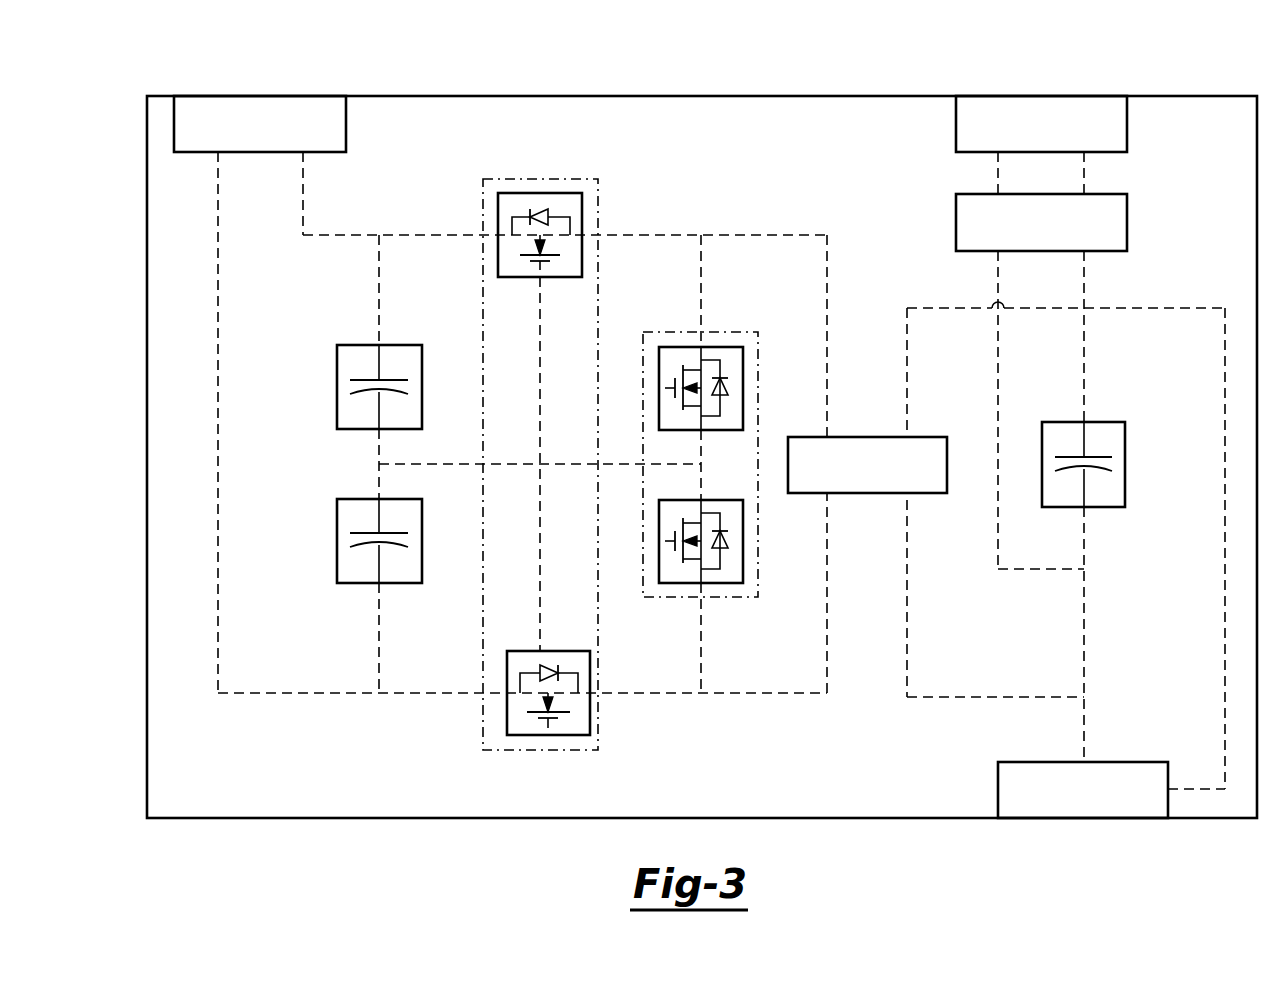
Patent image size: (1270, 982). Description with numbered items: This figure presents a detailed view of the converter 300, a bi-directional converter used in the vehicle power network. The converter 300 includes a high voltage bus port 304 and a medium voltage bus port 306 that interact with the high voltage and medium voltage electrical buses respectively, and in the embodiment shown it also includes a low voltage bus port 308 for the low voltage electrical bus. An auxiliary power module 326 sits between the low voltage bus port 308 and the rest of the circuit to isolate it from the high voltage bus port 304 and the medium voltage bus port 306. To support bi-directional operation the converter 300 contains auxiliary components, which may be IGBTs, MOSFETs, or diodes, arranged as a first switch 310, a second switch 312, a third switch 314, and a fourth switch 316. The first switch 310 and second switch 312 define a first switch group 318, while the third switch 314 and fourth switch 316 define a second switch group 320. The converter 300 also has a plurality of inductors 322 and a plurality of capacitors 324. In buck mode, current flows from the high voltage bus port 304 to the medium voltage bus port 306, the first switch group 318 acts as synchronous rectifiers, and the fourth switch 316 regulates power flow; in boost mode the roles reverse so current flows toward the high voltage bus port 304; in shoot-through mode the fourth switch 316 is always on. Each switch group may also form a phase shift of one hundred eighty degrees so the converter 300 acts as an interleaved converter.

The converter 300 is at (824, 60).
The high voltage bus port 304 is at (346, 122).
The medium voltage bus port 306 is at (998, 789).
The low voltage bus port 308 is at (956, 122).
The first switch 310 is at (540, 193).
The second switch 312 is at (549, 651).
The third switch 314 is at (743, 388).
The fourth switch 316 is at (743, 541).
The first switch group 318 is at (598, 190).
The second switch group 320 is at (738, 332).
The inductors 322 is at (862, 437).
The capacitors 324 is at (337, 387).
The auxiliary power module 326 is at (956, 220).